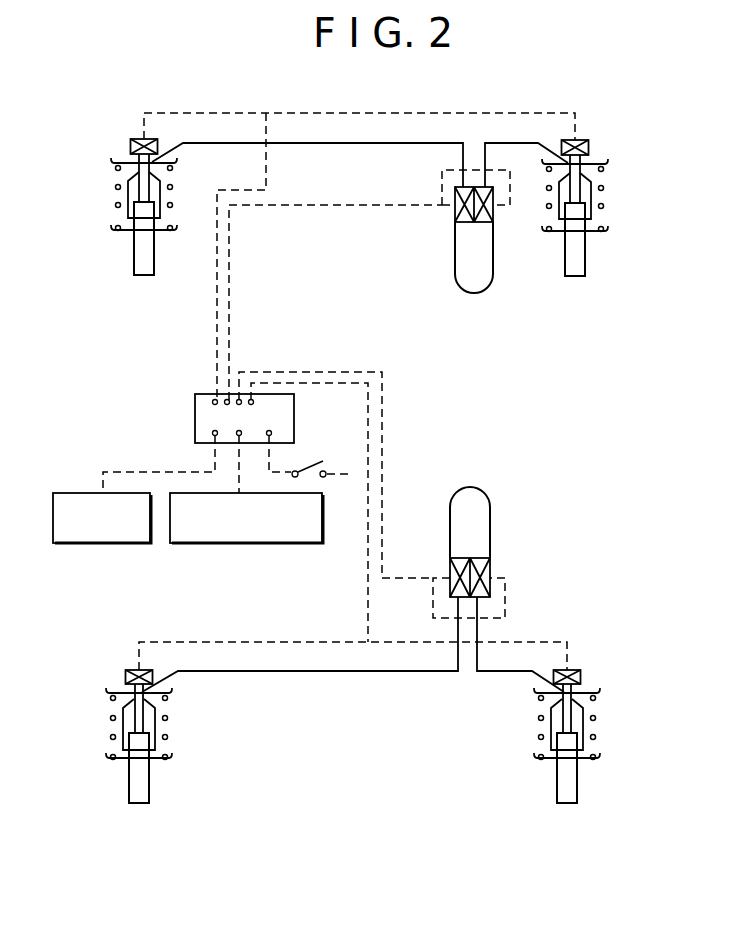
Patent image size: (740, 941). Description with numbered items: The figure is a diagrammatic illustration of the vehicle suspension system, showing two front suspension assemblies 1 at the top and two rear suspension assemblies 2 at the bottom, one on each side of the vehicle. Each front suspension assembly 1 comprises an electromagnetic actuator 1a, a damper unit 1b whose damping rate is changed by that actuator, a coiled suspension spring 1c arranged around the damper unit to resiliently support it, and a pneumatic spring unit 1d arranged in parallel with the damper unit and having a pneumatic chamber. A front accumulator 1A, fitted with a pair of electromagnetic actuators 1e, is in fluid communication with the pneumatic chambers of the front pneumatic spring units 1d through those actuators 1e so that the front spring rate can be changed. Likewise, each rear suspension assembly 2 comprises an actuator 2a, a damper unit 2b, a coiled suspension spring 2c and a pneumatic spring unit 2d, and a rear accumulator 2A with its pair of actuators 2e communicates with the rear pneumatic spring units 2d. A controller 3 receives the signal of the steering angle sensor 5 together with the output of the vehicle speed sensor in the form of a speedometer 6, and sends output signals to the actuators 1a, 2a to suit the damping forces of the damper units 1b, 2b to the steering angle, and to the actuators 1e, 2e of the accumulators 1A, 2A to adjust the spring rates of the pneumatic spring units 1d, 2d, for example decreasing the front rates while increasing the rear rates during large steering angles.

The suspension assembly 1 is at (104, 196).
The actuator 1a is at (129, 145).
The damper unit 1b is at (145, 251).
The coiled suspension spring 1c is at (173, 187).
The pneumatic spring unit 1d is at (159, 197).
The actuator 1e is at (455, 213).
The accumulator 1A is at (469, 245).
The suspension assembly 2 is at (93, 686).
The actuator 2a is at (132, 670).
The damper unit 2b is at (142, 787).
The coiled suspension spring 2c is at (168, 718).
The pneumatic spring unit 2d is at (123, 723).
The actuator 2e is at (450, 572).
The accumulator 2A is at (473, 542).
The controller 3 is at (295, 413).
The steering angle sensor 5 is at (280, 543).
The speedometer 6 is at (101, 543).